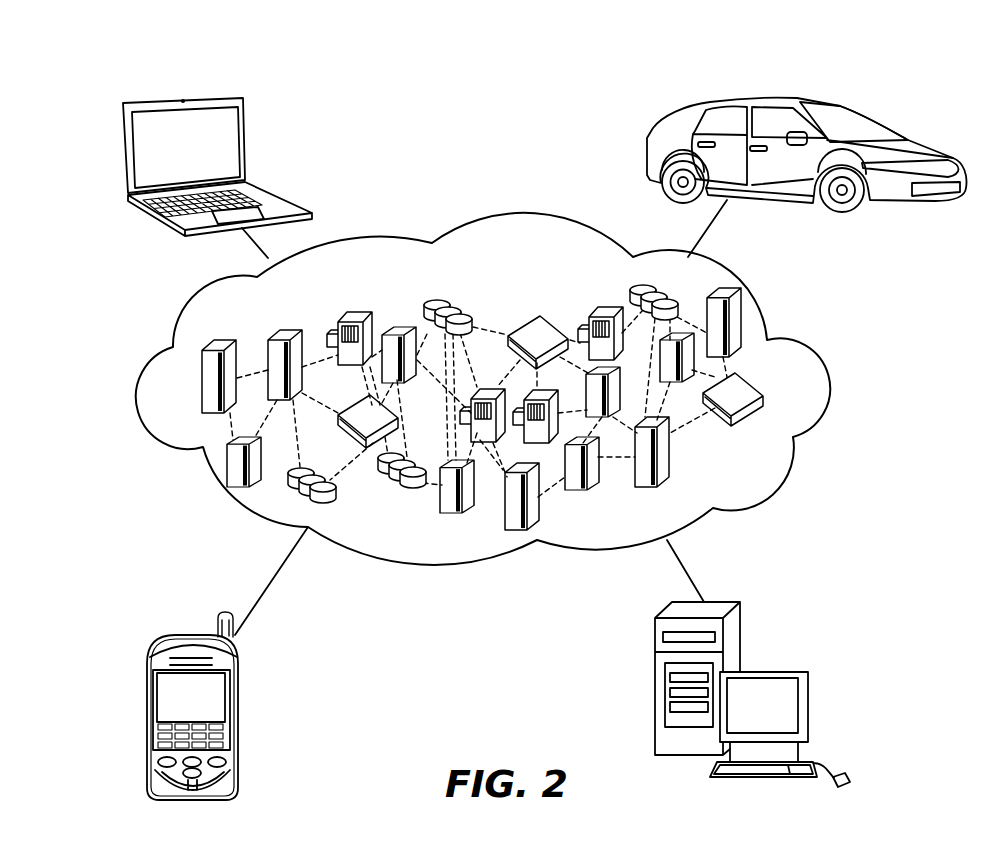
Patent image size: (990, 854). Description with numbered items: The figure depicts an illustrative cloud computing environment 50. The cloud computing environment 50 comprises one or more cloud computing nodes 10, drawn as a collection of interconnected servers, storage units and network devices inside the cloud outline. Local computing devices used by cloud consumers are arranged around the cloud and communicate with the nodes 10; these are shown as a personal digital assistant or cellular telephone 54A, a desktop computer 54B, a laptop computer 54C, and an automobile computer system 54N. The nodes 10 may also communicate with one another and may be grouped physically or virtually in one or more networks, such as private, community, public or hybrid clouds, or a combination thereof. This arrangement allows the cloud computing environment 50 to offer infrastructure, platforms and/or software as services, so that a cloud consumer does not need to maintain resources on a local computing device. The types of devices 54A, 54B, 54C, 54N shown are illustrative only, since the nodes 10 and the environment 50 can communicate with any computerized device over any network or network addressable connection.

The cloud computing node 10 is at (790, 418).
The cloud computing environment 50 is at (835, 383).
The personal digital assistant (PDA) or cellular telephone 54A is at (232, 697).
The desktop computer 54B is at (655, 703).
The laptop computer 54C is at (243, 157).
The automobile computer system 54N is at (657, 155).